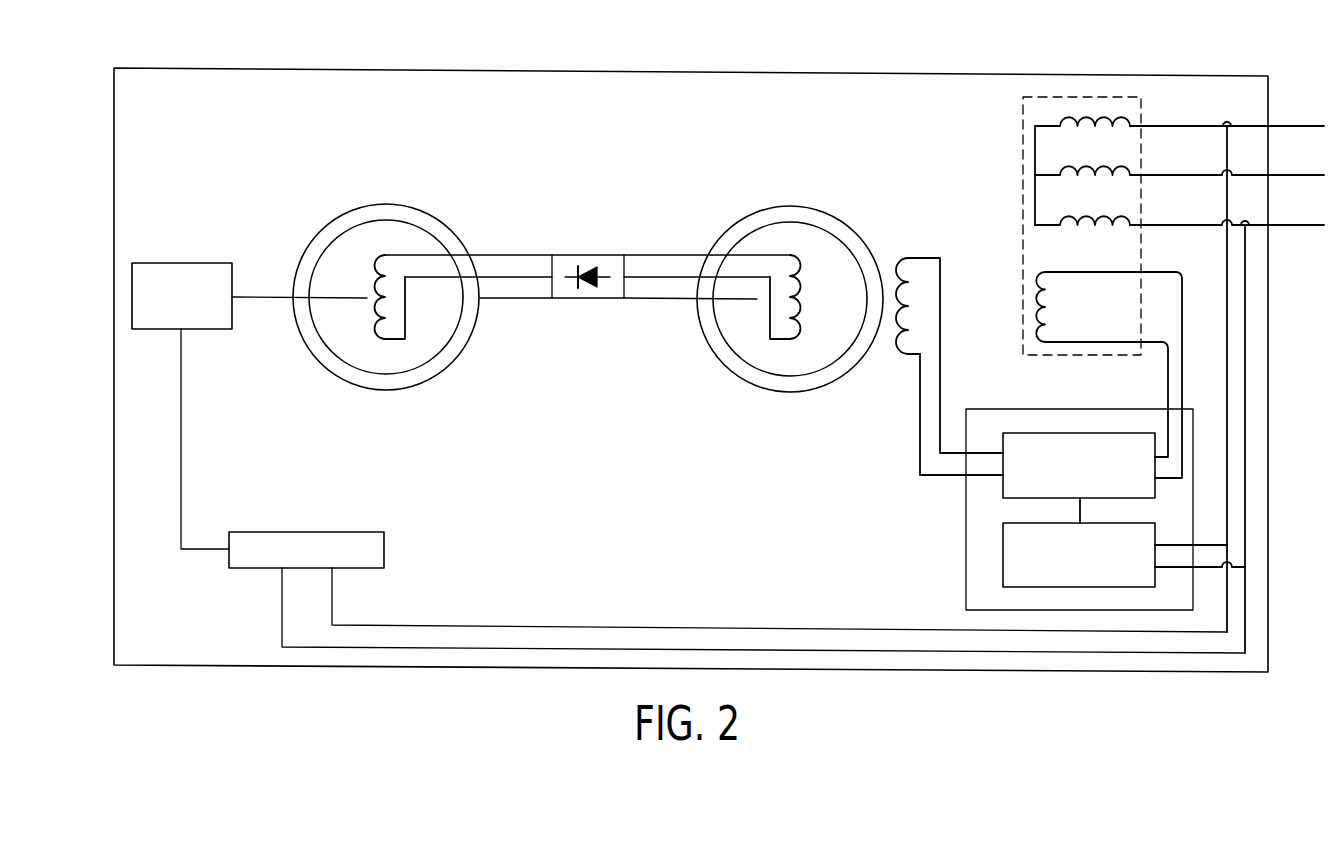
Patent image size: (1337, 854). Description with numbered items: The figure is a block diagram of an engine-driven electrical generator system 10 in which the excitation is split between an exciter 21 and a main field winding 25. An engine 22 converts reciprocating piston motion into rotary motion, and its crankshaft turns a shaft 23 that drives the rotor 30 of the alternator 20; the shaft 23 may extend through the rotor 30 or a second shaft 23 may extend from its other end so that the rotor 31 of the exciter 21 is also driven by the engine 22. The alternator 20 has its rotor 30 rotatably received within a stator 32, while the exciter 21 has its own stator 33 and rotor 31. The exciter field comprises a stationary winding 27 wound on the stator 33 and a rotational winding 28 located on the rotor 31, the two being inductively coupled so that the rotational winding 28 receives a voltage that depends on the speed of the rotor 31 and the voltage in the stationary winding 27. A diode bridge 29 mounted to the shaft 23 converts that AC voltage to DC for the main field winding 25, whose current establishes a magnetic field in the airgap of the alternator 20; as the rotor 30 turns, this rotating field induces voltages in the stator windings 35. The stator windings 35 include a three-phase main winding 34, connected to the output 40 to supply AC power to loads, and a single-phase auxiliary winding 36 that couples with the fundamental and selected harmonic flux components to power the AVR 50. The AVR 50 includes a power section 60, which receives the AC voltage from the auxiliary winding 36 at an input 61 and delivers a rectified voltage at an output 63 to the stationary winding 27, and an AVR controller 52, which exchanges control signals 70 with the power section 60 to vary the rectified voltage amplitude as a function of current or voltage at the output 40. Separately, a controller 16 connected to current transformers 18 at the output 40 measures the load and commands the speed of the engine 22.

The generator system 10 is at (1286, 381).
The controller 16 is at (305, 532).
The current transformer 18 is at (1221, 118).
The alternator 20 is at (386, 279).
The exciter 21 is at (790, 289).
The engine 22 is at (181, 262).
The shaft 23 is at (270, 296).
The main field winding 25 is at (368, 320).
The stationary winding 27 is at (894, 350).
The rotational winding 28 is at (806, 262).
The diode bridge 29 is at (586, 255).
The rotor 30 is at (383, 222).
The rotor 31 is at (787, 376).
The stator 32 is at (331, 229).
The stator 33 is at (728, 368).
The main winding 34 is at (1058, 132).
The stator windings 35 is at (1090, 226).
The auxiliary winding 36 is at (1056, 305).
The output 40 is at (1279, 123).
The AVR 50 is at (1076, 485).
The AVR controller 52 is at (1003, 556).
The power section 60 is at (1025, 433).
The input 61 is at (1161, 486).
The output 63 is at (999, 483).
The control signal 70 is at (1080, 513).